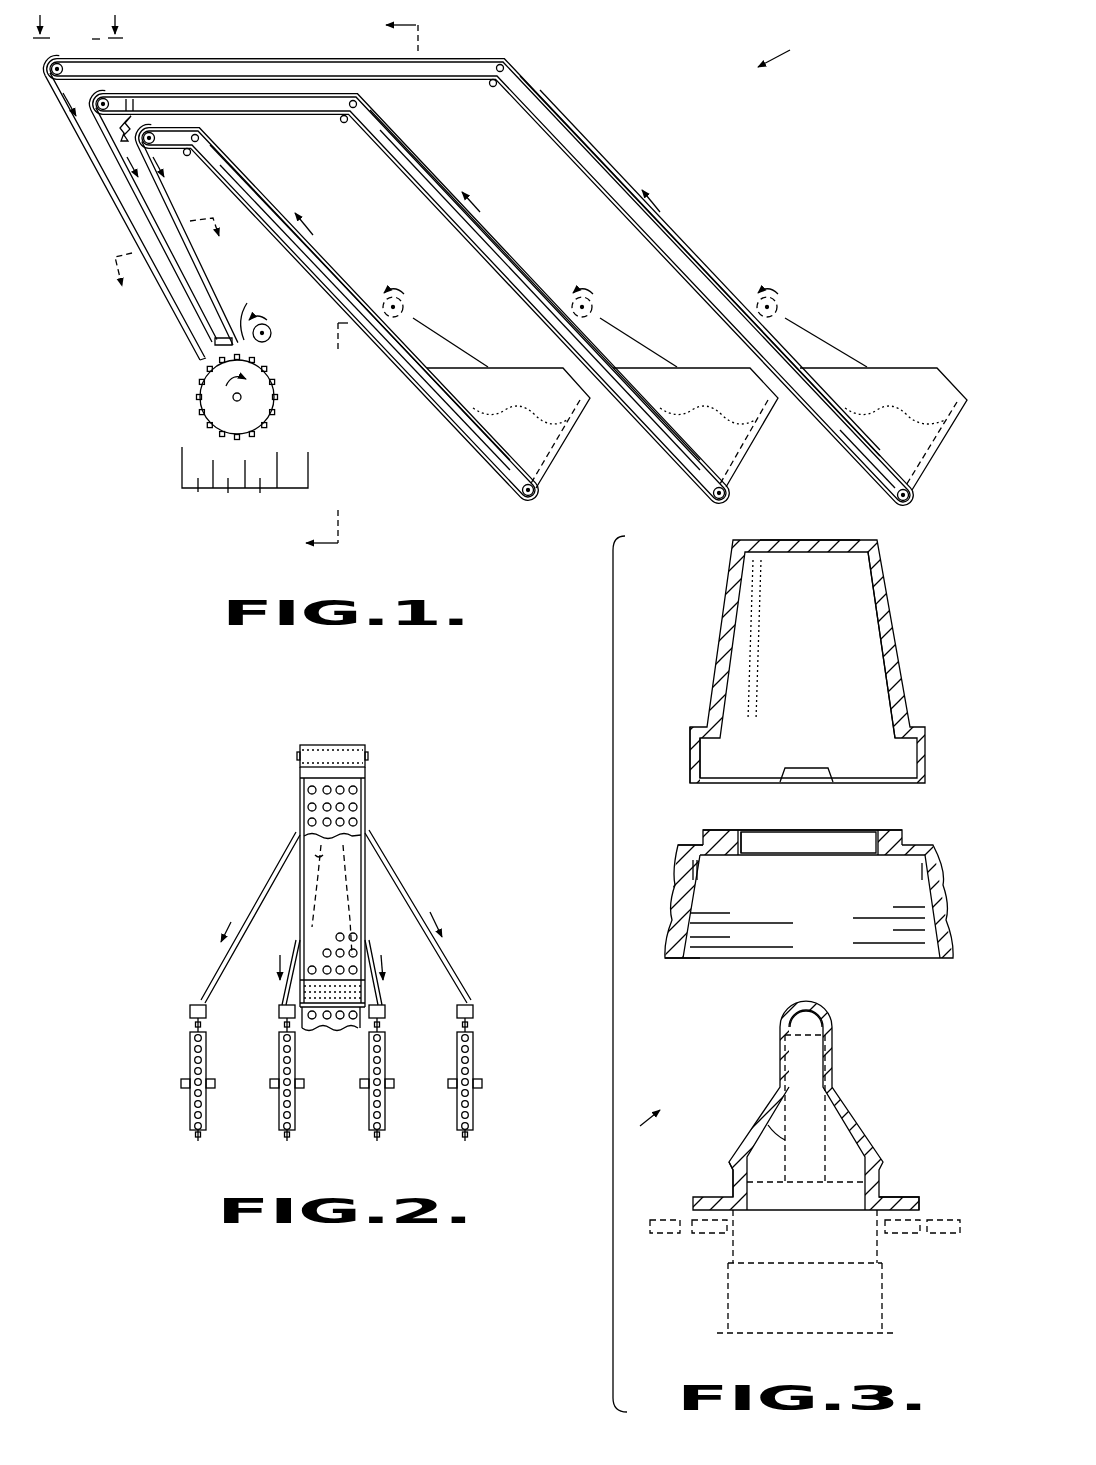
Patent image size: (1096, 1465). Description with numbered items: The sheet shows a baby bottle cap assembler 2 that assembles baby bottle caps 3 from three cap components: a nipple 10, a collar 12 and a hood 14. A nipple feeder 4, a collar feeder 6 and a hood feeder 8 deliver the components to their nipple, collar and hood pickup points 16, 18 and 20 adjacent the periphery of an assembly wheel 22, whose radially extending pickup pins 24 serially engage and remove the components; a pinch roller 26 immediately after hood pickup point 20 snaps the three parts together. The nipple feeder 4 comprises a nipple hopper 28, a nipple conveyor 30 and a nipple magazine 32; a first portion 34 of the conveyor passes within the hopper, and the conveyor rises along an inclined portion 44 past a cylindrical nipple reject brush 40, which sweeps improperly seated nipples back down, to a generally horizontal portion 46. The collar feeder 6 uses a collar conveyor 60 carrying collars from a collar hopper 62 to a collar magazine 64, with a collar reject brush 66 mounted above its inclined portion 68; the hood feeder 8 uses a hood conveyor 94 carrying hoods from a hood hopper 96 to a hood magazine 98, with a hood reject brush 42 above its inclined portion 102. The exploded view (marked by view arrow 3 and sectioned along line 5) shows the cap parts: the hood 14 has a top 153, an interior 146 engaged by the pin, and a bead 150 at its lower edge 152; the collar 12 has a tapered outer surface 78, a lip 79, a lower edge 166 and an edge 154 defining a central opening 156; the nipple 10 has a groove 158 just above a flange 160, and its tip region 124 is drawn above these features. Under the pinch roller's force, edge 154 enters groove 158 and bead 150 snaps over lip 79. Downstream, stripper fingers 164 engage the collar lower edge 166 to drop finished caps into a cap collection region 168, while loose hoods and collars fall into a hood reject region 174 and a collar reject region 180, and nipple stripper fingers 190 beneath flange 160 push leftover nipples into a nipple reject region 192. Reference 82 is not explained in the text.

In FIG. 1, the baby bottle cap assembler 2 is at (546, 291).
In FIG. 3, the baby bottle cap 3 is at (642, 1128).
In FIG. 1, the nipple feeder 4 is at (533, 71).
In FIG. 2, the nipple feeder 4 is at (315, 745).
In FIG. 1, the section line 5- 5 is at (88, 28).
In FIG. 1, the collar feeder 6 is at (389, 118).
In FIG. 2, the collar feeder 6 is at (313, 779).
In FIG. 1, the hood feeder 8 is at (232, 153).
In FIG. 2, the hood feeder 8 is at (321, 878).
In FIG. 3, the nipple 10 is at (772, 1061).
In FIG. 3, the collar 12 is at (676, 847).
In FIG. 3, the hood 14 is at (722, 610).
In FIG. 1, the nipple pickup point 16 is at (205, 358).
In FIG. 1, the collar pickup point 18 is at (216, 342).
In FIG. 1, the hood pickup point 20 is at (260, 308).
In FIG. 1, the assembly wheel 22 is at (278, 394).
In FIG. 1, the pickup pin 24 is at (283, 420).
In FIG. 2, the pickup pin 24 is at (194, 1133).
In FIG. 3, the pickup pin 24 is at (768, 1125).
In FIG. 1, the pinch roller 26 is at (273, 327).
In FIG. 2, the pinch roller 26 is at (196, 1006).
In FIG. 1, the nipple hopper 28 is at (893, 367).
In FIG. 1, the nipple conveyor 30 is at (576, 139).
In FIG. 1, the nipple magazine 32 is at (82, 179).
In FIG. 2, the nipple magazine 32 is at (293, 950).
In FIG. 1, the first portion 34 is at (872, 447).
In FIG. 1, the nipple reject brush 40 is at (780, 310).
In FIG. 1, the hood reject brush 42 is at (410, 300).
In FIG. 2, the hood reject brush 42 is at (358, 990).
In FIG. 1, the inclined portion 44 is at (688, 247).
In FIG. 1, the generally horizontal portion 46 is at (257, 58).
In FIG. 1, the collar conveyor 60 is at (423, 163).
In FIG. 1, the collar hopper 62 is at (741, 442).
In FIG. 1, the collar magazine 64 is at (128, 201).
In FIG. 2, the collar magazine 64 is at (374, 955).
In FIG. 1, the collar reject brush 66 is at (595, 303).
In FIG. 1, the inclined portion 68 is at (512, 259).
In FIG. 3, the outer surface 78 is at (668, 923).
In FIG. 3, the lip 79 is at (697, 840).
In FIG. 1, the agitator 82 is at (133, 118).
In FIG. 1, the hood conveyor 94 is at (266, 197).
In FIG. 1, the hood hopper 96 is at (556, 441).
In FIG. 1, the hood magazine 98 is at (174, 197).
In FIG. 2, the hood magazine 98 is at (331, 972).
In FIG. 1, the inclined portion 102 is at (340, 273).
In FIG. 3, the nipple tip 124 is at (832, 1018).
In FIG. 3, the interior 146 is at (862, 616).
In FIG. 3, the bead 150 is at (712, 772).
In FIG. 3, the lower edge 152 is at (690, 777).
In FIG. 3, the top 153 is at (818, 540).
In FIG. 3, the edge 154 is at (747, 842).
In FIG. 3, the central opening 156 is at (833, 832).
In FIG. 3, the groove 158 is at (735, 1183).
In FIG. 3, the flange 160 is at (910, 1195).
In FIG. 3, the stripper fingers 164 is at (668, 1238).
In FIG. 3, the lower edge 166 is at (673, 960).
In FIG. 1, the cap collection region 168 is at (230, 492).
In FIG. 1, the hood reject region 174 is at (300, 478).
In FIG. 1, the collar reject region 180 is at (258, 492).
In FIG. 3, the nipple stripper fingers 190 is at (713, 1238).
In FIG. 1, the nipple reject region 192 is at (198, 491).